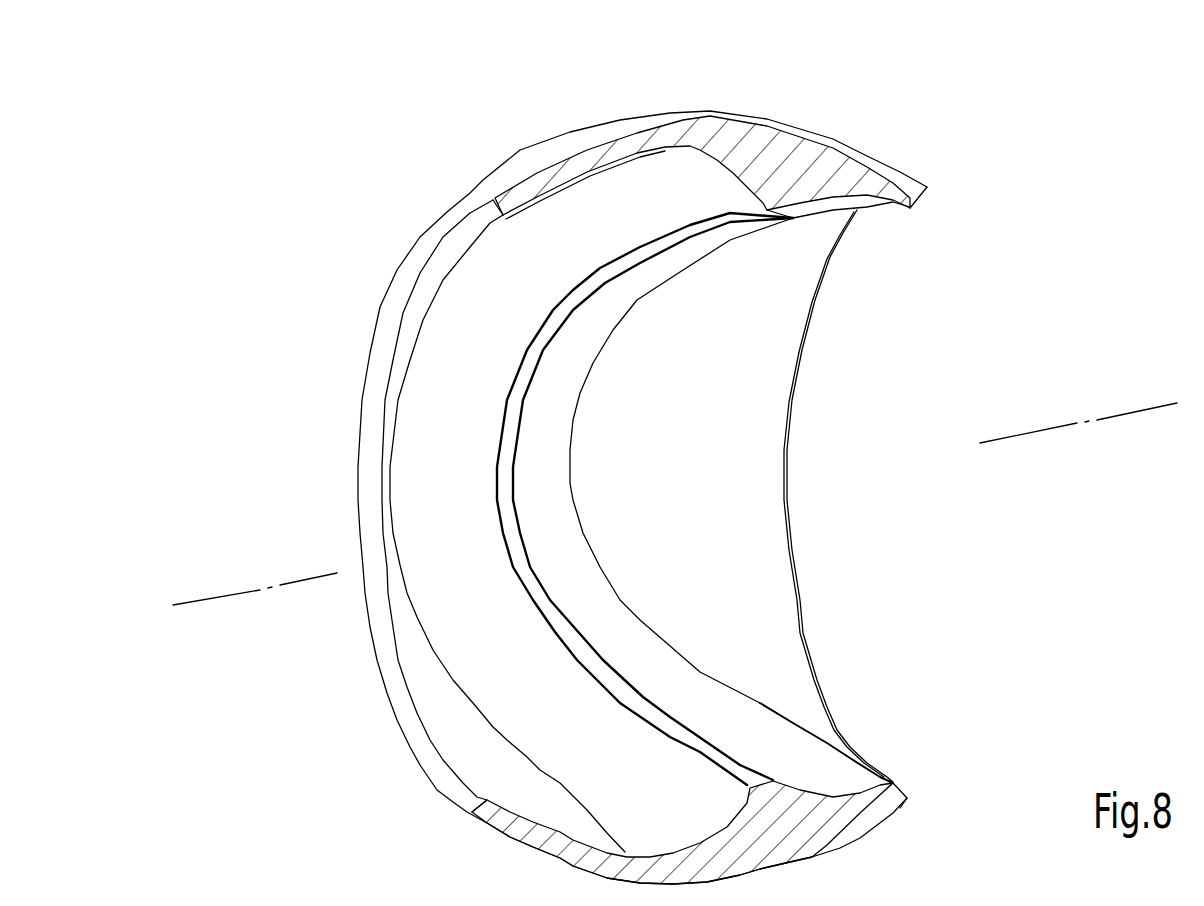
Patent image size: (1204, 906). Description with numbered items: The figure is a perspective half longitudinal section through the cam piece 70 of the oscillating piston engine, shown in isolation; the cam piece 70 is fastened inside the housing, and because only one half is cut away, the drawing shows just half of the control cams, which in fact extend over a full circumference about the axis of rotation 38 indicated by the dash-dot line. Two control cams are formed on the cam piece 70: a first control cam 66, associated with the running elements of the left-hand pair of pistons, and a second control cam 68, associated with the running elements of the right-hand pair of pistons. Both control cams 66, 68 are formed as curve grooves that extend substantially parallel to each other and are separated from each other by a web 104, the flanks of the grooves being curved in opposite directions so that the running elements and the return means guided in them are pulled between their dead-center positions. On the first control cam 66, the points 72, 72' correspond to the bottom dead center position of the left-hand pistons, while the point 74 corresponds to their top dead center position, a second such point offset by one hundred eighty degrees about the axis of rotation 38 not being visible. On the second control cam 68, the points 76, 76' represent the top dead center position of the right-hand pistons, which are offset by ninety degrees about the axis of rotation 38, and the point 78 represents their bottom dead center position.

The cam piece 70 is at (318, 300).
The point of the first control cam 72 is at (710, 131).
The point of the first control cam 72' is at (682, 842).
The point of the second control cam 76 is at (872, 230).
The point of the second control cam 76' is at (934, 816).
The web 104 is at (506, 432).
The point of the second control cam 78 is at (531, 493).
The second control cam 68 is at (567, 580).
The first control cam 66 is at (435, 500).
The point of the first control cam 74 is at (468, 510).
The axis of rotation 38 is at (1125, 415).